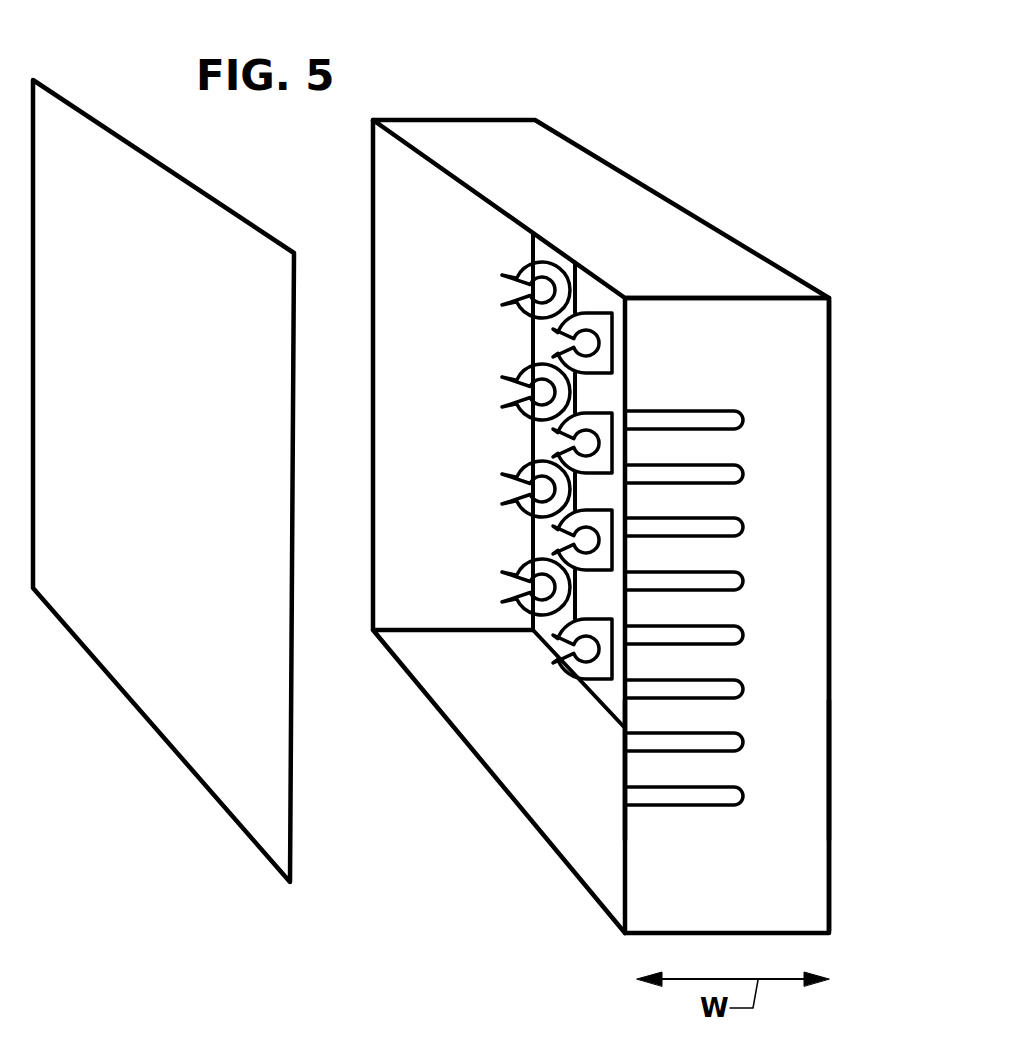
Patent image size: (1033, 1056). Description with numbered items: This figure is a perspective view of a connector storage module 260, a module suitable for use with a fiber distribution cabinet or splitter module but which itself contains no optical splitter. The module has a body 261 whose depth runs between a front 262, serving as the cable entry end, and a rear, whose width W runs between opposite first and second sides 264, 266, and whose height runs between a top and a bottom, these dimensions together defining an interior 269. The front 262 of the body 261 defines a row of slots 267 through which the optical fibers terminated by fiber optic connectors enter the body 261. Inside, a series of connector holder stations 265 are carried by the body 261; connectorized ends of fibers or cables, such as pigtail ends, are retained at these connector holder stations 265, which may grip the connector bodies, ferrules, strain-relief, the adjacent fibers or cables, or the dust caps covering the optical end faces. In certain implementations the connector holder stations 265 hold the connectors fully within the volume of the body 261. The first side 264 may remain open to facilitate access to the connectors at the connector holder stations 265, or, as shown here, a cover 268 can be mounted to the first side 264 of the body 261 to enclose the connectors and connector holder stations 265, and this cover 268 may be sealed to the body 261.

The connector storage module 260 is at (650, 526).
The body 261 is at (833, 570).
The front 262 is at (755, 361).
The first side 264 is at (624, 769).
The connector holder stations 265 is at (510, 374).
The second side 266 is at (832, 769).
The slots 267 is at (673, 806).
The cover 268 is at (133, 710).
The interior 269 is at (458, 253).